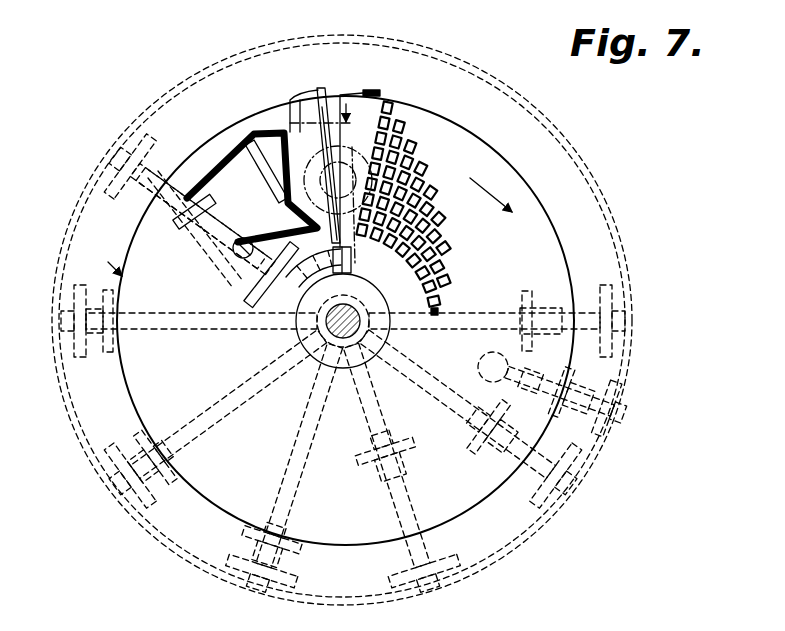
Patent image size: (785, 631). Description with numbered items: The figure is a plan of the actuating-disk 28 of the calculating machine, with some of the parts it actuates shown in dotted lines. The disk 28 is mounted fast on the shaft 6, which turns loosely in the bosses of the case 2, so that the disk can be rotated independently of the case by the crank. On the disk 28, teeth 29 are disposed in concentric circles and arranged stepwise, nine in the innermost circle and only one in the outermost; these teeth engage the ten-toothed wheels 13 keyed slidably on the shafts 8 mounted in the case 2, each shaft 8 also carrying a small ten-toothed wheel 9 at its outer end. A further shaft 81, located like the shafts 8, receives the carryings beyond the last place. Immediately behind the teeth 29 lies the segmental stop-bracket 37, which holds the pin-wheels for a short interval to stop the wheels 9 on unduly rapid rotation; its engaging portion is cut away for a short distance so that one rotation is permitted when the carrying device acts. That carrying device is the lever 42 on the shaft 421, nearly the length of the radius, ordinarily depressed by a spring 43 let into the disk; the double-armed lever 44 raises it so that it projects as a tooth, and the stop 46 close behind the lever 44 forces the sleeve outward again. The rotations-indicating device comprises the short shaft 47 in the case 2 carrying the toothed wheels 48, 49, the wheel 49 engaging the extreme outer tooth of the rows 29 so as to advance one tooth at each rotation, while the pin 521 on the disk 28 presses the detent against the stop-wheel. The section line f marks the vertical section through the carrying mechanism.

The case 2 is at (626, 242).
The shaft 6 is at (338, 334).
The shaft 8 is at (185, 330).
The shaft 81 is at (148, 182).
The small toothed wheel 9 is at (100, 180).
The ten-toothed wheel 13 is at (108, 360).
The actuating-disk 28 is at (558, 215).
The teeth 29 is at (438, 188).
The segmental stop-bracket 37 is at (300, 284).
The lever 42 is at (326, 100).
The shaft 421 is at (276, 118).
The spring 43 is at (262, 282).
The double-armed lever 44 is at (228, 170).
The stop 46 is at (190, 228).
The short shaft 47 is at (538, 386).
The toothed wheel 48 is at (616, 406).
The toothed wheel 49 is at (566, 384).
The pin 521 is at (382, 93).
The section line f is at (223, 201).